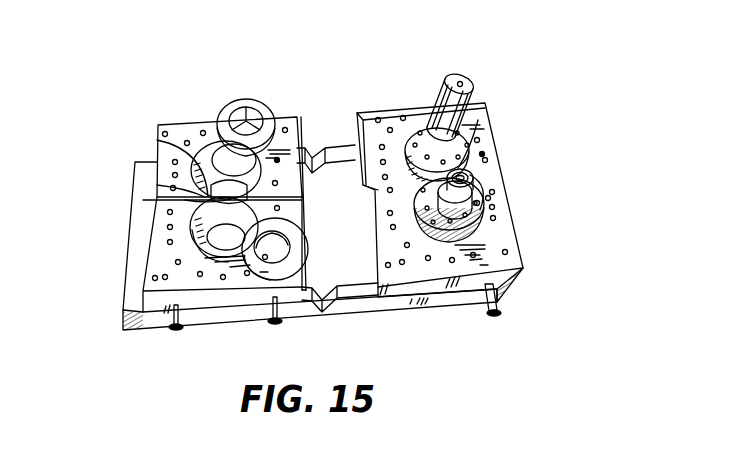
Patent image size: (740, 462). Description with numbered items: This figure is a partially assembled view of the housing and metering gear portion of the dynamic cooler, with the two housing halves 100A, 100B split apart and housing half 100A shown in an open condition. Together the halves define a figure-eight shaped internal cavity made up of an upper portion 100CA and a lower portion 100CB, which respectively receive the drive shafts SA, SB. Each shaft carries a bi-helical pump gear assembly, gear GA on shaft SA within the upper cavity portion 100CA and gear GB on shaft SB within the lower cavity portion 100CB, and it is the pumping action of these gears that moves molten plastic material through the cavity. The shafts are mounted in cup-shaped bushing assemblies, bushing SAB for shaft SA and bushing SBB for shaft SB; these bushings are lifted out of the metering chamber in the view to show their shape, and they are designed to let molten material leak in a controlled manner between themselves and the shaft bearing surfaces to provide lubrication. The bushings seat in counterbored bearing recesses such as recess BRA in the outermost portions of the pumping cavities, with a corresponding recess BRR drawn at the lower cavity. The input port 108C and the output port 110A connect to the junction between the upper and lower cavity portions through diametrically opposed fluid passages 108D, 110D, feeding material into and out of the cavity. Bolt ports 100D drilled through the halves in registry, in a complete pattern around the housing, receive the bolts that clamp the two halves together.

The housing half 100A is at (150, 290).
The housing half 100B is at (493, 154).
The upper portion of internal cavity 100CA is at (212, 166).
The lower portion of internal cavity 100CB is at (205, 244).
The bolt ports 100D is at (200, 277).
The input port 108C is at (186, 192).
The fluid passage 108D is at (195, 150).
The output port 110A is at (366, 192).
The fluid passage 110D is at (370, 184).
The drive shaft SA is at (461, 84).
The cup-shaped bushing assembly SAB is at (250, 100).
The counterbored bearing recess BRA is at (250, 170).
The bearing housing R BRR is at (200, 217).
The cup-shaped bushing assembly SBB is at (272, 280).
The bi-helical pump gear assembly GA is at (417, 212).
The bi-helical pump gear assembly GB is at (417, 230).
The drive shaft SB is at (472, 208).